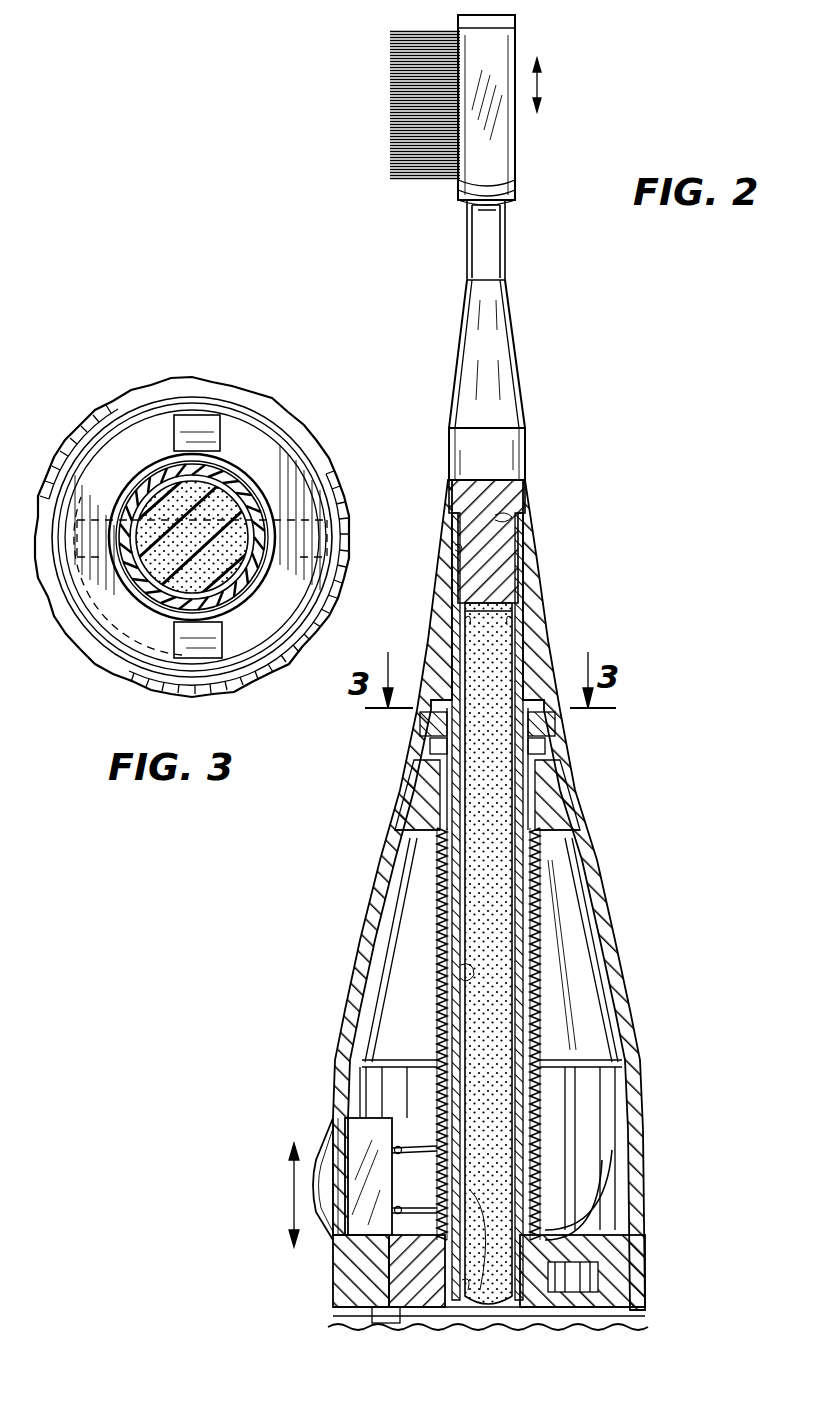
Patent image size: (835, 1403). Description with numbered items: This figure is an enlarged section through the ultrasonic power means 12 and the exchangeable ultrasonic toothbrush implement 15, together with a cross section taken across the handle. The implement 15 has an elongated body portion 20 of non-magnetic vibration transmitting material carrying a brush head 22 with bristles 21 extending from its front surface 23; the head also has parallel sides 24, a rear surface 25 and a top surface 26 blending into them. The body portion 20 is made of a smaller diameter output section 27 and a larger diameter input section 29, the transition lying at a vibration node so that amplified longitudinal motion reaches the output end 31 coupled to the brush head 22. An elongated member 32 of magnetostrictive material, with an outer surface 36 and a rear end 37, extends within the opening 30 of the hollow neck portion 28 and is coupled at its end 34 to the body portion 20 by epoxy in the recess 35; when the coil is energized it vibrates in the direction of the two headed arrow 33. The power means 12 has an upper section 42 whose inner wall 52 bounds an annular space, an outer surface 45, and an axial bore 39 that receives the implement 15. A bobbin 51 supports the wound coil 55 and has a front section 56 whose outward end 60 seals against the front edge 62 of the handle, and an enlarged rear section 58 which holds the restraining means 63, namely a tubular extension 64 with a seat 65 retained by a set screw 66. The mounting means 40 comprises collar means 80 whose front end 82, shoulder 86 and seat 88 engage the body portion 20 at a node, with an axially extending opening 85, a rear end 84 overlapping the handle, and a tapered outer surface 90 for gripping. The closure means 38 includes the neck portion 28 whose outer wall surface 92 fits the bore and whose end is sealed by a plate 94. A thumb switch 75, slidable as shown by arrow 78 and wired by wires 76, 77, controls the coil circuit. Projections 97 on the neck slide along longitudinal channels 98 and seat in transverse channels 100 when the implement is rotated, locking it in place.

In FIG. 2, the ultrasonic power means 12 is at (628, 986).
In FIG. 3, the ultrasonic power means 12 is at (210, 378).
In FIG. 2, the ultrasonic toothbrush implement 15 is at (528, 440).
In FIG. 2, the elongated body portion 20 is at (525, 495).
In FIG. 2, the bristles 21 is at (392, 112).
In FIG. 2, the brush head 22 is at (517, 22).
In FIG. 2, the front surface 23 is at (457, 22).
In FIG. 2, the sides 24 is at (493, 152).
In FIG. 2, the rear surface 25 is at (517, 122).
In FIG. 2, the top surface 26 is at (493, 10).
In FIG. 2, the output section 27 is at (508, 257).
In FIG. 2, the neck portion 28 is at (412, 848).
In FIG. 2, the input section 29 is at (492, 482).
In FIG. 2, the opening 30 is at (414, 1180).
In FIG. 2, the output end 31 is at (505, 213).
In FIG. 2, the elongated member 32 is at (494, 892).
In FIG. 3, the elongated member 32 is at (150, 605).
In FIG. 2, the two headed arrow 33 is at (540, 92).
In FIG. 2, the end of elongated member 34 is at (540, 592).
In FIG. 2, the recess 35 is at (466, 622).
In FIG. 2, the outer surface 36 is at (540, 978).
In FIG. 2, the rear end 37 is at (482, 1231).
In FIG. 2, the closure means 38 is at (620, 1314).
In FIG. 2, the axial bore 39 is at (457, 972).
In FIG. 2, the mounting means 40 is at (553, 631).
In FIG. 2, the upper section 42 is at (648, 1036).
In FIG. 2, the outer surface 45 is at (640, 1222).
In FIG. 2, the bobbin 51 is at (440, 902).
In FIG. 2, the inner wall 52 is at (612, 1062).
In FIG. 2, the wound coil 55 is at (545, 907).
In FIG. 2, the front section 56 is at (565, 787).
In FIG. 2, the rear section 58 is at (340, 1296).
In FIG. 2, the outward end 60 is at (560, 712).
In FIG. 3, the outward end 60 is at (125, 448).
In FIG. 2, the front edge 62 is at (418, 706).
In FIG. 3, the front edge 62 is at (281, 430).
In FIG. 2, the restraining means 63 is at (348, 1306).
In FIG. 2, the tubular extension 64 is at (620, 1205).
In FIG. 2, the seat 65 is at (332, 1262).
In FIG. 2, the set screw 66 is at (625, 1262).
In FIG. 2, the thumb switch 75 is at (318, 1158).
In FIG. 2, the wire 76 is at (615, 1137).
In FIG. 2, the wire 77 is at (620, 1170).
In FIG. 2, the arrow 78 is at (292, 1186).
In FIG. 2, the collar means 80 is at (447, 582).
In FIG. 2, the front end 82 is at (452, 512).
In FIG. 2, the rear end 84 is at (432, 724).
In FIG. 2, the axially extending opening 85 is at (455, 548).
In FIG. 2, the shoulder 86 is at (510, 518).
In FIG. 2, the seat 88 is at (452, 520).
In FIG. 2, the outer surface 90 is at (527, 565).
In FIG. 2, the outer wall surface 92 is at (440, 988).
In FIG. 2, the plate 94 is at (620, 1292).
In FIG. 2, the projection 97 is at (432, 750).
In FIG. 3, the projection 97 is at (108, 512).
In FIG. 3, the longitudinal channel 98 is at (200, 420).
In FIG. 2, the transverse channel 100 is at (405, 818).
In FIG. 3, the transverse channel 100 is at (255, 412).